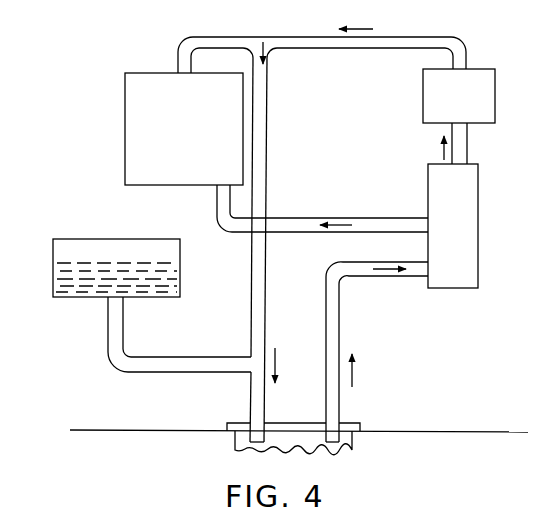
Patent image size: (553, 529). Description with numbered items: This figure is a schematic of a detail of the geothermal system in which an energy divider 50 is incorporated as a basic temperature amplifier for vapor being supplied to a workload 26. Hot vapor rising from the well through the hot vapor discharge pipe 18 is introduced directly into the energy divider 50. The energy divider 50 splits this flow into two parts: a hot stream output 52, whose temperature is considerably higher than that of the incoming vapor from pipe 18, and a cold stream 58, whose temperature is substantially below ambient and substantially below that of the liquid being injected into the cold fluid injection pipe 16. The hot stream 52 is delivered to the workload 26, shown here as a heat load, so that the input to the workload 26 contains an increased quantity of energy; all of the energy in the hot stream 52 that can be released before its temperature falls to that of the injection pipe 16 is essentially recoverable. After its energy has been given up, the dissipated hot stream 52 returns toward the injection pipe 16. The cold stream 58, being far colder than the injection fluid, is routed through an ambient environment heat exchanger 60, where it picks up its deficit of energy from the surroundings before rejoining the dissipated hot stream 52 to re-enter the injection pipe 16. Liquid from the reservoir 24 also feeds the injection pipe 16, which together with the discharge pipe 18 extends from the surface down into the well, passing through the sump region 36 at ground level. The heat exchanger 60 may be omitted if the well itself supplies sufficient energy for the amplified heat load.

The ambient environment heat exchanger 60 is at (152, 73).
The workload 26 is at (495, 101).
The hot stream output 52 is at (467, 154).
The energy divider 50 is at (478, 219).
The cold stream 58 is at (405, 218).
The cold fluid injection pipe 16 is at (250, 406).
The hot vapor discharge pipe 18 is at (326, 406).
The reservoir 24 is at (133, 239).
The ground basin / sump 36 is at (232, 424).